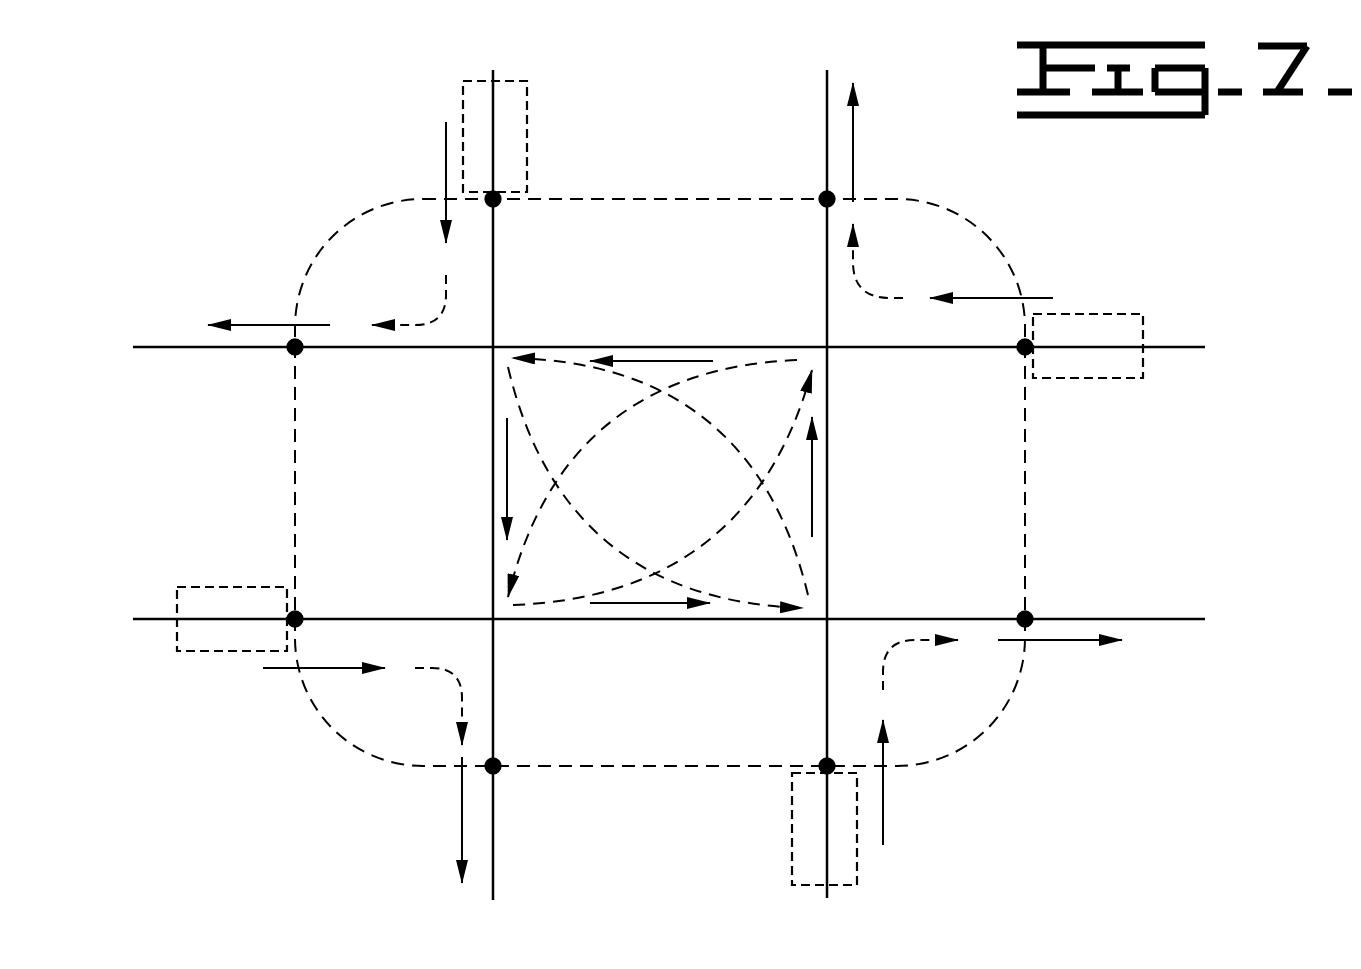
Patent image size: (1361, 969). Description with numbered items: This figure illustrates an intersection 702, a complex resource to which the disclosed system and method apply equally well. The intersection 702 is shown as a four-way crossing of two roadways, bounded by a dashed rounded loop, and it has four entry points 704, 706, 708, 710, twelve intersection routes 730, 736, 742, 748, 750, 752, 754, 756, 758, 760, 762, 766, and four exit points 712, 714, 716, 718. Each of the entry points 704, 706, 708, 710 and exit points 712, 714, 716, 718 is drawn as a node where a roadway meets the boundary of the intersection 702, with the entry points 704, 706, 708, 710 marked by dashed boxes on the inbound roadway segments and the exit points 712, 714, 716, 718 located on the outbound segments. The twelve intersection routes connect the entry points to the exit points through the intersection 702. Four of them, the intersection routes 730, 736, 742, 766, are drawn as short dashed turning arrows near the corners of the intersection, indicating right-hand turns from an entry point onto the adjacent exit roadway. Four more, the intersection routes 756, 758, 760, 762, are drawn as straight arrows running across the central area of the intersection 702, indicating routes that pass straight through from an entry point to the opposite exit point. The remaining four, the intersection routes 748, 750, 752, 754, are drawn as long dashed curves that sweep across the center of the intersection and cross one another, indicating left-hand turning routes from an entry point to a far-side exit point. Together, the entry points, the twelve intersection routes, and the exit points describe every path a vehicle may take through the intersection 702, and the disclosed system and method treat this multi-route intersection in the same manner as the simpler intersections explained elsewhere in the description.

The intersection 702 is at (973, 228).
The entry point 704 is at (1022, 352).
The entry point 706 is at (496, 203).
The entry point 708 is at (297, 617).
The entry point 710 is at (824, 763).
The exit point 712 is at (1022, 616).
The exit point 714 is at (824, 203).
The exit point 716 is at (298, 350).
The exit point 718 is at (496, 763).
The intersection route 730 is at (872, 290).
The intersection route 736 is at (425, 318).
The intersection route 742 is at (455, 685).
The intersection route 748 is at (545, 500).
The intersection route 750 is at (618, 375).
The intersection route 752 is at (687, 388).
The intersection route 754 is at (708, 528).
The intersection route 756 is at (815, 452).
The intersection route 758 is at (640, 360).
The intersection route 760 is at (505, 452).
The intersection route 762 is at (645, 606).
The intersection route 766 is at (905, 650).